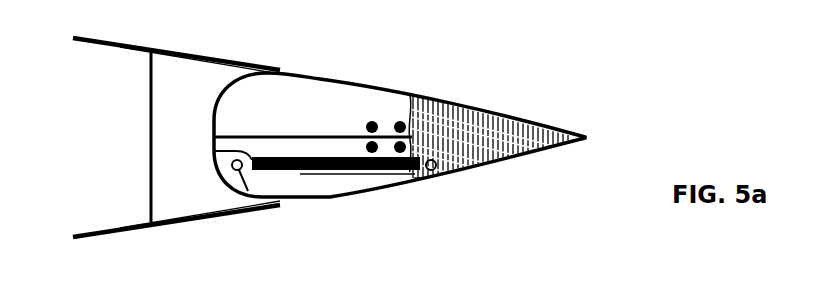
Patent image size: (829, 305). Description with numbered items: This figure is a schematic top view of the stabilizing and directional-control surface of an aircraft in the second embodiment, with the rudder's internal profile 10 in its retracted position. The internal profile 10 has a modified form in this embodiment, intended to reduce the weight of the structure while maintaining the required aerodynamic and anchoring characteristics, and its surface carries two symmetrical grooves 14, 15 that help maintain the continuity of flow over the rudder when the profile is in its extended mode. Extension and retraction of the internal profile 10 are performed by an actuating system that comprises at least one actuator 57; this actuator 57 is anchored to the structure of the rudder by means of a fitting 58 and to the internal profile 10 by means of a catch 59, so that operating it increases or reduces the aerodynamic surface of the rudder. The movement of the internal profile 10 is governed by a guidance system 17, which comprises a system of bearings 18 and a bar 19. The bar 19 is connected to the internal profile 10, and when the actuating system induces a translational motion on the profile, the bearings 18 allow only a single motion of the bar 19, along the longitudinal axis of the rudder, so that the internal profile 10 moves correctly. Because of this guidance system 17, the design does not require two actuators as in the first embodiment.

The internal profile 10 is at (488, 138).
The groove 14 is at (407, 96).
The groove 15 is at (420, 180).
The guidance system 17 is at (322, 123).
The system of bearings 18 is at (374, 121).
The bar 19 is at (262, 135).
The actuator 57 is at (358, 172).
The fitting 58 is at (236, 170).
The catch 59 is at (437, 173).